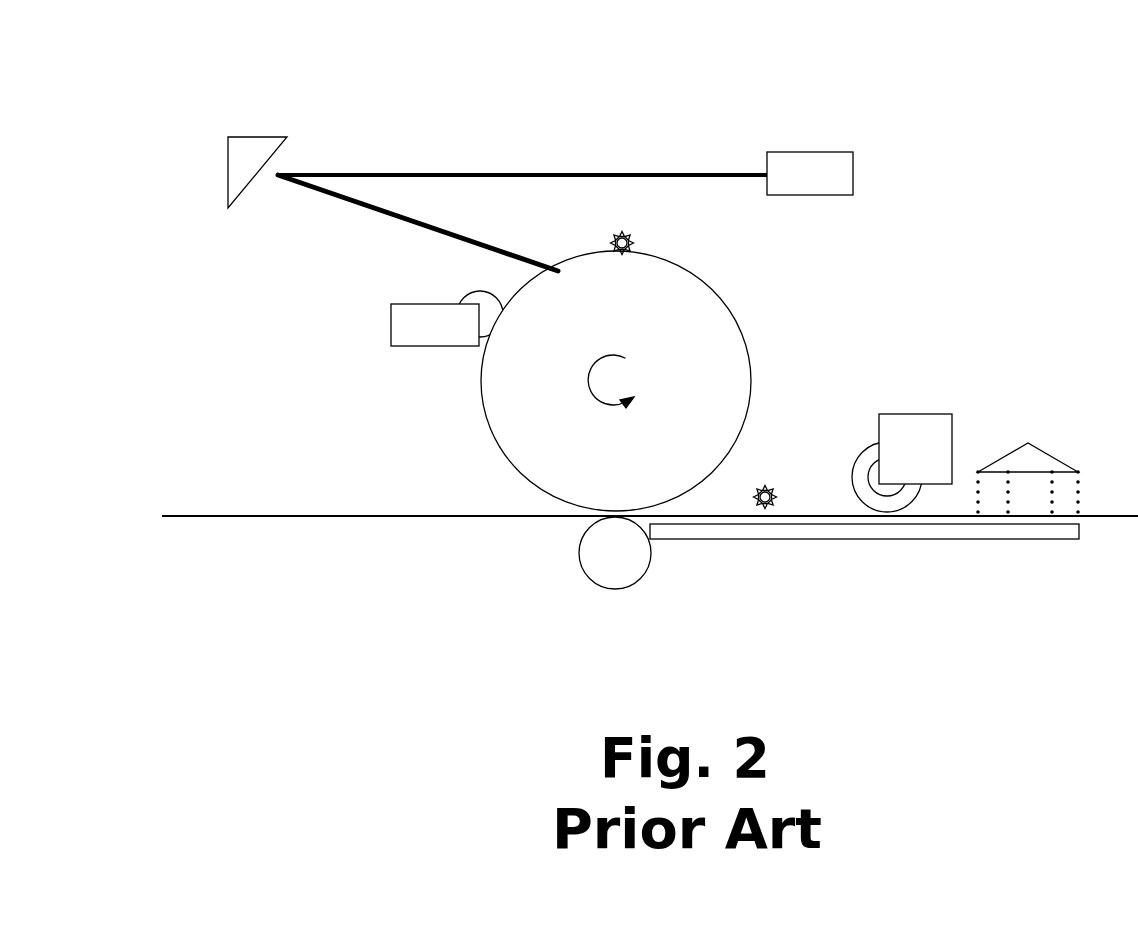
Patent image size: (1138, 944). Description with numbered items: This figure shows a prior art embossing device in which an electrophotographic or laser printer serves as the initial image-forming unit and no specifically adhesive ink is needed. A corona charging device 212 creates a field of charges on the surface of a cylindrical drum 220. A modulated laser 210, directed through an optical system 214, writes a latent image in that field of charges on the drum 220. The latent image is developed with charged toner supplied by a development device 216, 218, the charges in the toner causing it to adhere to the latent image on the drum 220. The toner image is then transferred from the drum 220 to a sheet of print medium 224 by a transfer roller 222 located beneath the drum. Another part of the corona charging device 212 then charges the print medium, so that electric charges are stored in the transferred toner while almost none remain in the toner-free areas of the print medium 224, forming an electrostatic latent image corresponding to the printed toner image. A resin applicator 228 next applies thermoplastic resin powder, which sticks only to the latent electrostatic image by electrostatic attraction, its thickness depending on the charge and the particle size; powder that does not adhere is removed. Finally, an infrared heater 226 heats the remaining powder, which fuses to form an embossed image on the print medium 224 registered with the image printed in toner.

The modulated laser 210 is at (628, 176).
The corona charging device 212 is at (637, 243).
The optical system 214 is at (812, 152).
The development device 216 is at (480, 291).
The development device 218 is at (390, 320).
The cylindrical drum 220 is at (495, 438).
The transfer roller 222 is at (590, 578).
The print medium 224 is at (800, 539).
The infrared heater 226 is at (1048, 450).
The resin applicator 228 is at (915, 414).